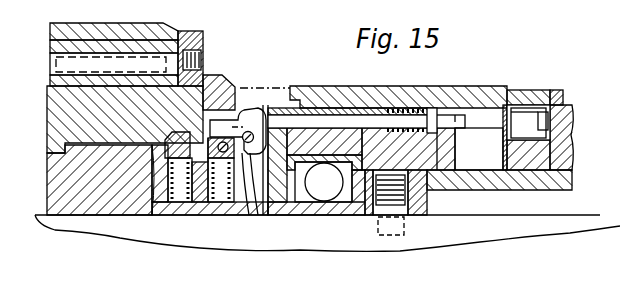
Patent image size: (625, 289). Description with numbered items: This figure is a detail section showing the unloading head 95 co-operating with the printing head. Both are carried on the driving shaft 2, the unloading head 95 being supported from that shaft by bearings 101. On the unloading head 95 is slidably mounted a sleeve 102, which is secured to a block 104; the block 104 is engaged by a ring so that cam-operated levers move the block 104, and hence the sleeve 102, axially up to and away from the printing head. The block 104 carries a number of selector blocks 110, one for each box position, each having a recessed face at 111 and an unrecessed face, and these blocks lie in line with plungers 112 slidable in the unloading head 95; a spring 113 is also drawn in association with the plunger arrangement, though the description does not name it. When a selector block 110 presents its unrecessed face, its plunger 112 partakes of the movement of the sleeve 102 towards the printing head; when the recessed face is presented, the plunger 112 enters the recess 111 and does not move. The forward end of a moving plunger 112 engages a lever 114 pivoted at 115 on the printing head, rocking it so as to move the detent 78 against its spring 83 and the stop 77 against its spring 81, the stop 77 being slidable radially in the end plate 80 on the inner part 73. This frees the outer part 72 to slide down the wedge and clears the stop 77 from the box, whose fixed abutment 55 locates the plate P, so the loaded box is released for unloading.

The plate P is at (133, 28).
The fixed abutment 55 is at (195, 33).
The outer part 72 is at (66, 128).
The inner part 73 is at (68, 183).
The releasable stop 77 is at (215, 76).
The detent 78 is at (152, 182).
The spring 83 is at (174, 200).
The spring 81 is at (216, 198).
The end plate 80 is at (243, 192).
The pivot 115 is at (257, 165).
The lever 114 is at (255, 115).
The plunger 112 is at (322, 118).
The spring 113 is at (415, 108).
The sleeve 102 is at (453, 92).
The selector block 110 is at (521, 118).
The recess 111 is at (565, 105).
The block 104 is at (560, 155).
The bearings 101 is at (333, 196).
The unloading head 95 is at (488, 190).
The driving shaft 2 is at (305, 245).